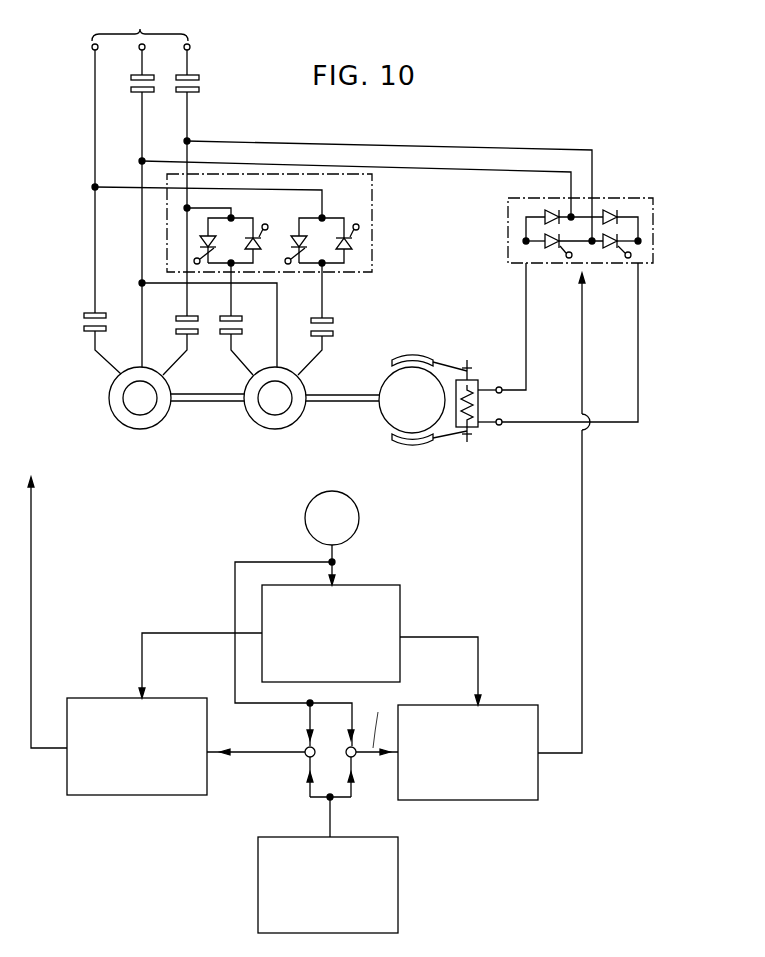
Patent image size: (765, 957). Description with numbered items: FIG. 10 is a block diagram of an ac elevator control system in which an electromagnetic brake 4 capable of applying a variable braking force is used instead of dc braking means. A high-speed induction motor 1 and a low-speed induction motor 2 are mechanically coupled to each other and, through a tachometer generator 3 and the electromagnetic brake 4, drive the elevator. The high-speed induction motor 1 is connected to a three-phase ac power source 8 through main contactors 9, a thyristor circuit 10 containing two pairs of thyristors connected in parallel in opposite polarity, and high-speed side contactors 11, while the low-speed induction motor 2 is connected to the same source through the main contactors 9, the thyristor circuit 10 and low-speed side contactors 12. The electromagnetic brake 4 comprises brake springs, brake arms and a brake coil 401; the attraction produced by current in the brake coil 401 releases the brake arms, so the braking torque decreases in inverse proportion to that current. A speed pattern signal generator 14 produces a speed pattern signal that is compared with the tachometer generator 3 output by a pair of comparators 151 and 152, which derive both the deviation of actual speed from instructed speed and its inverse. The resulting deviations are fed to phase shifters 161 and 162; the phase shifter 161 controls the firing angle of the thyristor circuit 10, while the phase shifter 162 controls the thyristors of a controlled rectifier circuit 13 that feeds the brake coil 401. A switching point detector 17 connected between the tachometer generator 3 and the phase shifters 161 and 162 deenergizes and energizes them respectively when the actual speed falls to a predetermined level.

The high-speed induction motor 1 is at (167, 421).
The low-speed induction motor 2 is at (301, 421).
The tachometer generator 3 is at (367, 501).
The electromagnetic brake 4 is at (461, 441).
The three-phase ac power source 8 is at (141, 26).
The main contactors 9 is at (201, 91).
The thyristor circuit 10 is at (374, 238).
The high-speed side contactors 11 is at (82, 323).
The low-speed side contactors 12 is at (333, 327).
The controlled rectifier circuit 13 is at (652, 198).
The speed pattern signal generator 14 is at (398, 858).
The switching point detector 17 is at (401, 608).
The comparator 151 is at (305, 756).
The comparator 152 is at (353, 758).
The phase shifter 161 is at (158, 798).
The phase shifter 162 is at (496, 803).
The brake coil 401 is at (480, 428).